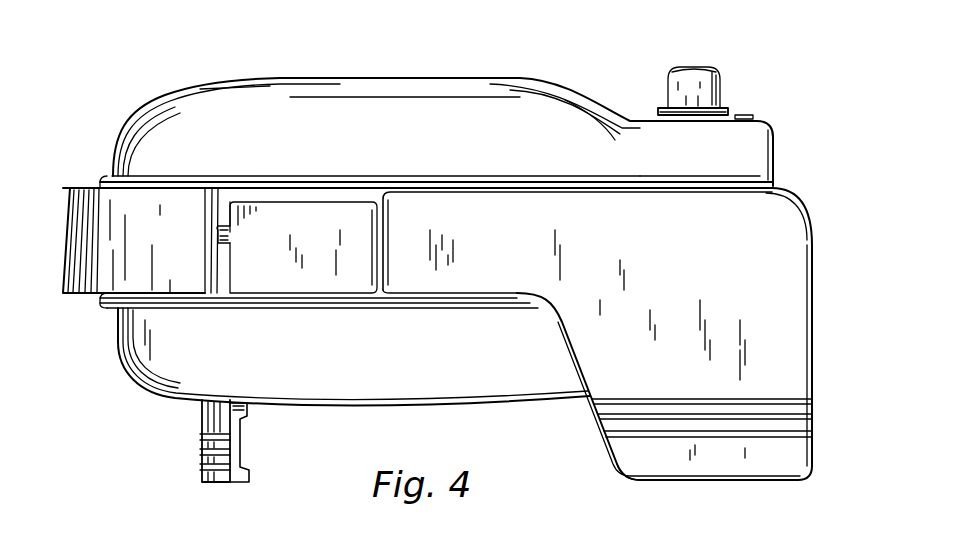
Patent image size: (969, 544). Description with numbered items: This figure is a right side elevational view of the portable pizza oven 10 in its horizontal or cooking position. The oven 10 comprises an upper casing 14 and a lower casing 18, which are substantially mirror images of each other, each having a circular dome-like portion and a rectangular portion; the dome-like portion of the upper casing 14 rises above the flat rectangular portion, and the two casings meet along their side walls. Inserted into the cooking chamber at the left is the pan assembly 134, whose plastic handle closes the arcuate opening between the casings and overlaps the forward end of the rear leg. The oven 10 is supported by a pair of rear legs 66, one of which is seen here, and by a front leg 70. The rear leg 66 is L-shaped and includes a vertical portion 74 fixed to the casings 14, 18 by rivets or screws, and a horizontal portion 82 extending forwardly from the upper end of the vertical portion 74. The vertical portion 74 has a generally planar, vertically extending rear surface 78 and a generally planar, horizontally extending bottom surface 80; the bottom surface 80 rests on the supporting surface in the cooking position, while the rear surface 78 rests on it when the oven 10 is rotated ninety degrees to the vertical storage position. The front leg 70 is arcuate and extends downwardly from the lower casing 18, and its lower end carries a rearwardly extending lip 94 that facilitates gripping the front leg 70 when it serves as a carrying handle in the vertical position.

The portable pizza oven 10 is at (122, 90).
The upper casing 14 is at (540, 70).
The lower casing 18 is at (136, 378).
The pan assembly 134 is at (50, 198).
The horizontal portion 82 is at (507, 258).
The rear surface 78 is at (813, 308).
The vertical portion 74 is at (783, 377).
The rear leg 66 is at (667, 482).
The bottom surface 80 is at (720, 482).
The front leg 70 is at (198, 480).
The lip 94 is at (245, 481).